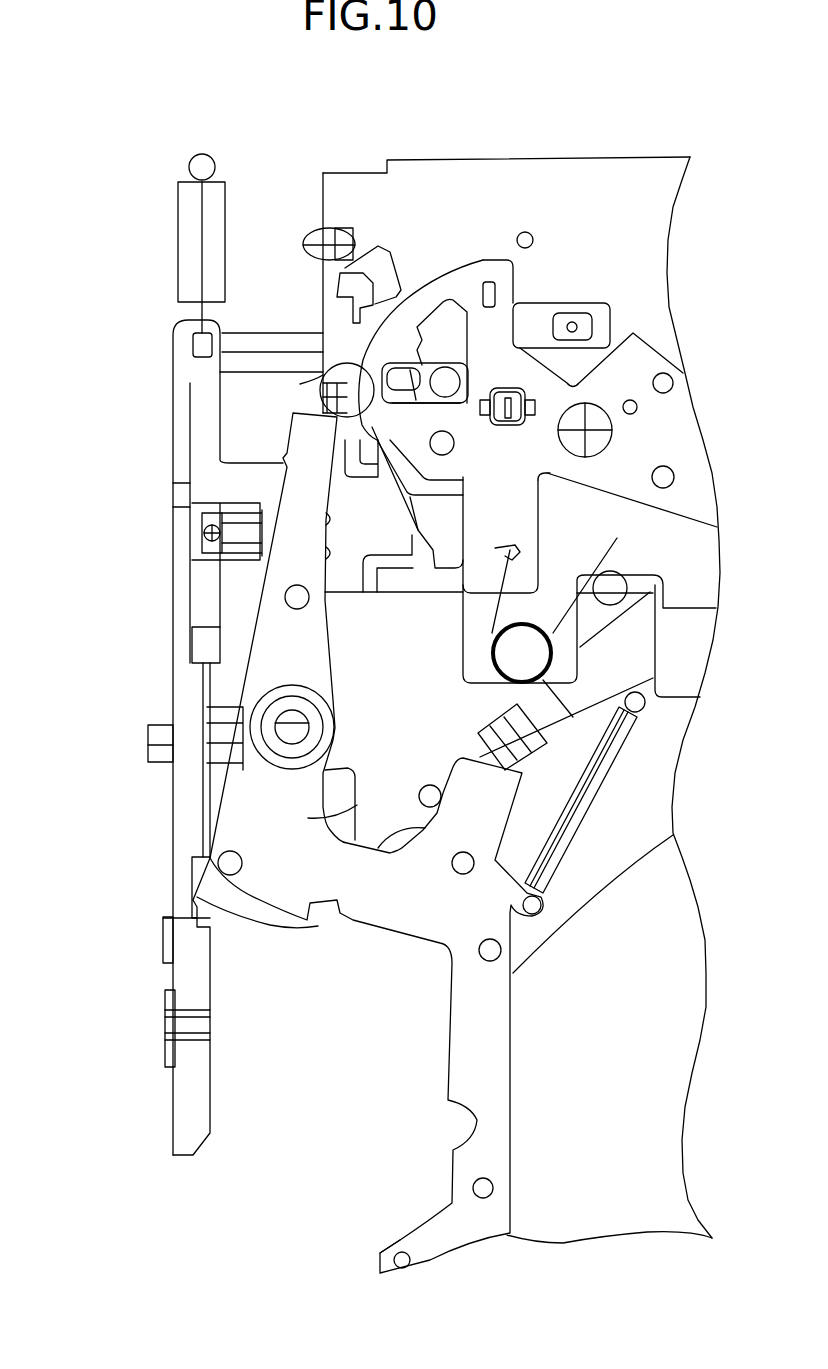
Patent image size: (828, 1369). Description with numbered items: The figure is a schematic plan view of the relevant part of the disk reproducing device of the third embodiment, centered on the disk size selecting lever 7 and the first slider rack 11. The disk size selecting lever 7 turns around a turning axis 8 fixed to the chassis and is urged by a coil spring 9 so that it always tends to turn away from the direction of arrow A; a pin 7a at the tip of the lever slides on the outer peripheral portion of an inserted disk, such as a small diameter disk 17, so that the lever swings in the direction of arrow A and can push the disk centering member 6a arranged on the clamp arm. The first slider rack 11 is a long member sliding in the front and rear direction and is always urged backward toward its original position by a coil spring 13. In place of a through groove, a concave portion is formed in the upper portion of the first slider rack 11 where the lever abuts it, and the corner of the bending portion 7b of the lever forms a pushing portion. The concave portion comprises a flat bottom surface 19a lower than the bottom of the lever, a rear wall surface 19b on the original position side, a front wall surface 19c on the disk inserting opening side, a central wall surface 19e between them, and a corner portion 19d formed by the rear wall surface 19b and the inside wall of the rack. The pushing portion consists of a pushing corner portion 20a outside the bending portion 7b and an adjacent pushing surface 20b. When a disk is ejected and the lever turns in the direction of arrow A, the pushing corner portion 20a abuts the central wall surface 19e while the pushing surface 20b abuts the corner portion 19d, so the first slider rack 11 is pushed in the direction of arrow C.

The coil spring 13 is at (190, 256).
The disk centering member 6a is at (300, 384).
The first slider rack 11 is at (180, 635).
The turning axis 8 is at (290, 737).
The pushing surface 20b is at (215, 812).
The rear wall surface 19b is at (190, 858).
The central wall surface 19e is at (190, 872).
The pushing corner portion 20a is at (193, 893).
The front wall surface 19c is at (175, 922).
The corner portion 19d is at (316, 927).
The flat bottom surface 19a is at (218, 925).
The bending portion 7b is at (357, 792).
The disk size selecting lever 7 is at (497, 1048).
The pin 7a is at (390, 1275).
The coil spring 9 is at (603, 793).
The small diameter disk 17 is at (568, 913).
The arrow C is at (120, 728).
The arrow A is at (300, 953).